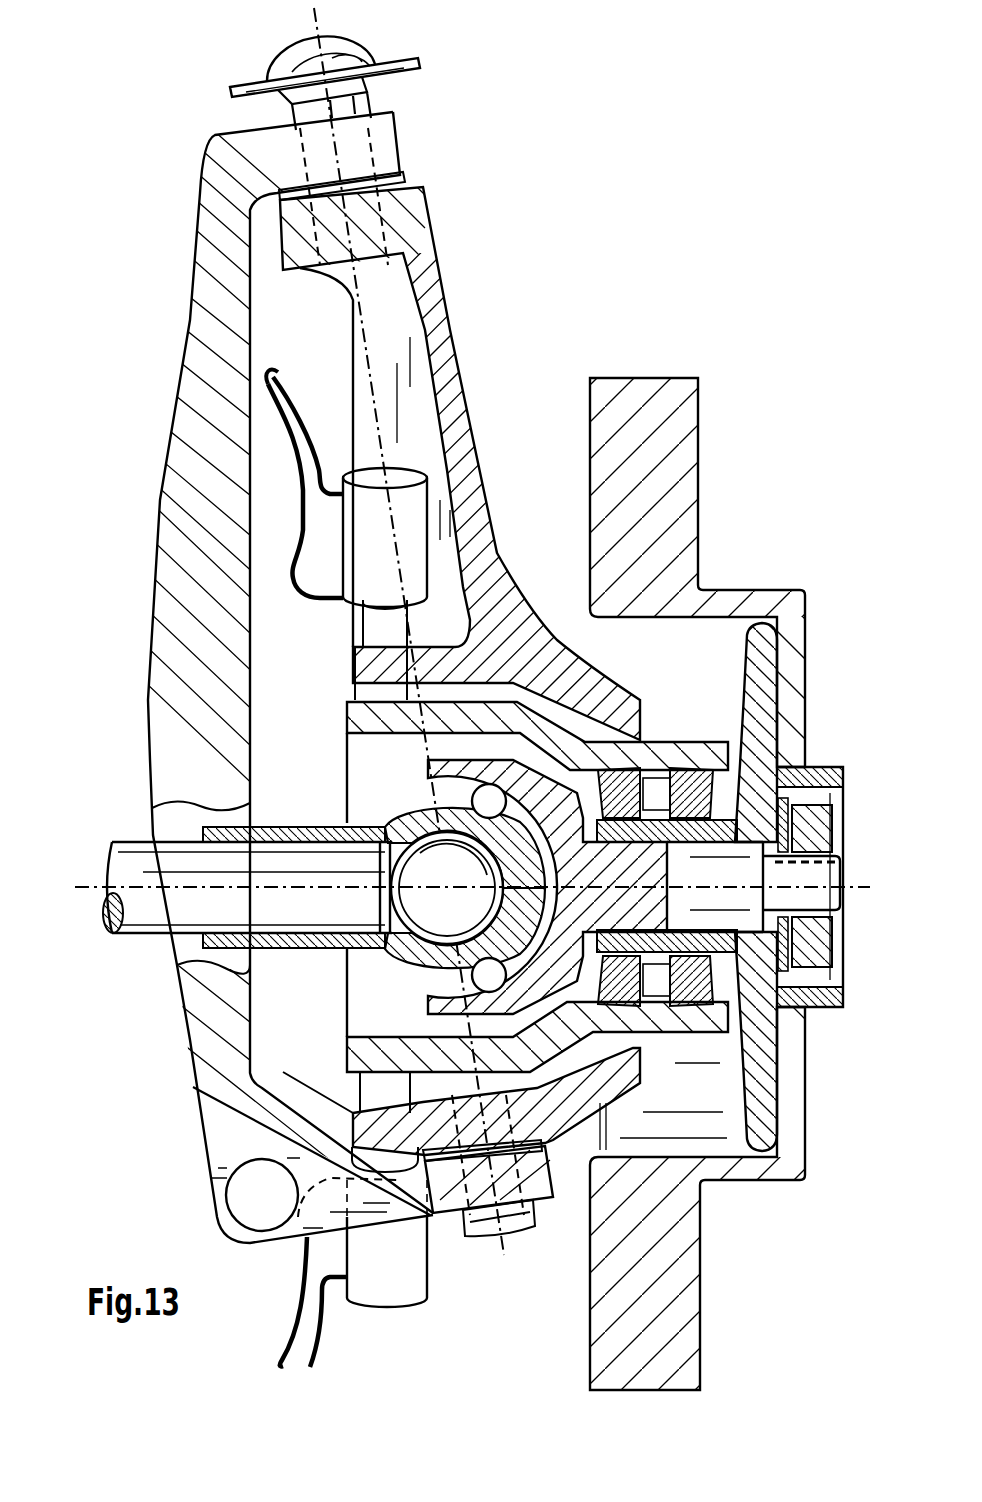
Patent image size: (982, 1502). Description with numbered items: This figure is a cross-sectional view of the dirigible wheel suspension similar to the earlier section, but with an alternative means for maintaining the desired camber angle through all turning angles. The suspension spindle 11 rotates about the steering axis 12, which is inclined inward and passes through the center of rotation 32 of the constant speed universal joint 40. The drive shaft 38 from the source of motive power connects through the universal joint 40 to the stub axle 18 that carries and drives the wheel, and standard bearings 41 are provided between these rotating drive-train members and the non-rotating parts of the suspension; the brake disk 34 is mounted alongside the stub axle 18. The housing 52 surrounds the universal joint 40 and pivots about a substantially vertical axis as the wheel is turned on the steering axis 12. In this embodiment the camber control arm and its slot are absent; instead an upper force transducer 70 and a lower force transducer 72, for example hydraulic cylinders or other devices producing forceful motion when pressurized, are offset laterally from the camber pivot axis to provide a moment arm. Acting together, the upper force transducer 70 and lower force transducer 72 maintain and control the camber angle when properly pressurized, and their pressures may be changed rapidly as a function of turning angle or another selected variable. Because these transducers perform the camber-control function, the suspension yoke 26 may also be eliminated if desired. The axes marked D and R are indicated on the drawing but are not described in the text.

The bearing housing clamp arm 11 is at (463, 365).
The clamping bolt 12 is at (365, 365).
The hub cap with nut 18 is at (777, 760).
The steering knuckle housing 26 is at (200, 455).
The ball joint 32 is at (445, 892).
The wheel flange 34 is at (677, 505).
The drive shaft 38 is at (158, 934).
The bearing carrier / hub 40 is at (430, 1005).
The tapered roller bearings 41 is at (700, 785).
The lower carrier plate 52 is at (390, 1053).
The spacer sleeve 70 is at (411, 517).
The lower spacer sleeve 72 is at (403, 1257).
The pivot axis D is at (93, 887).
The wheel rotation axis R is at (857, 887).